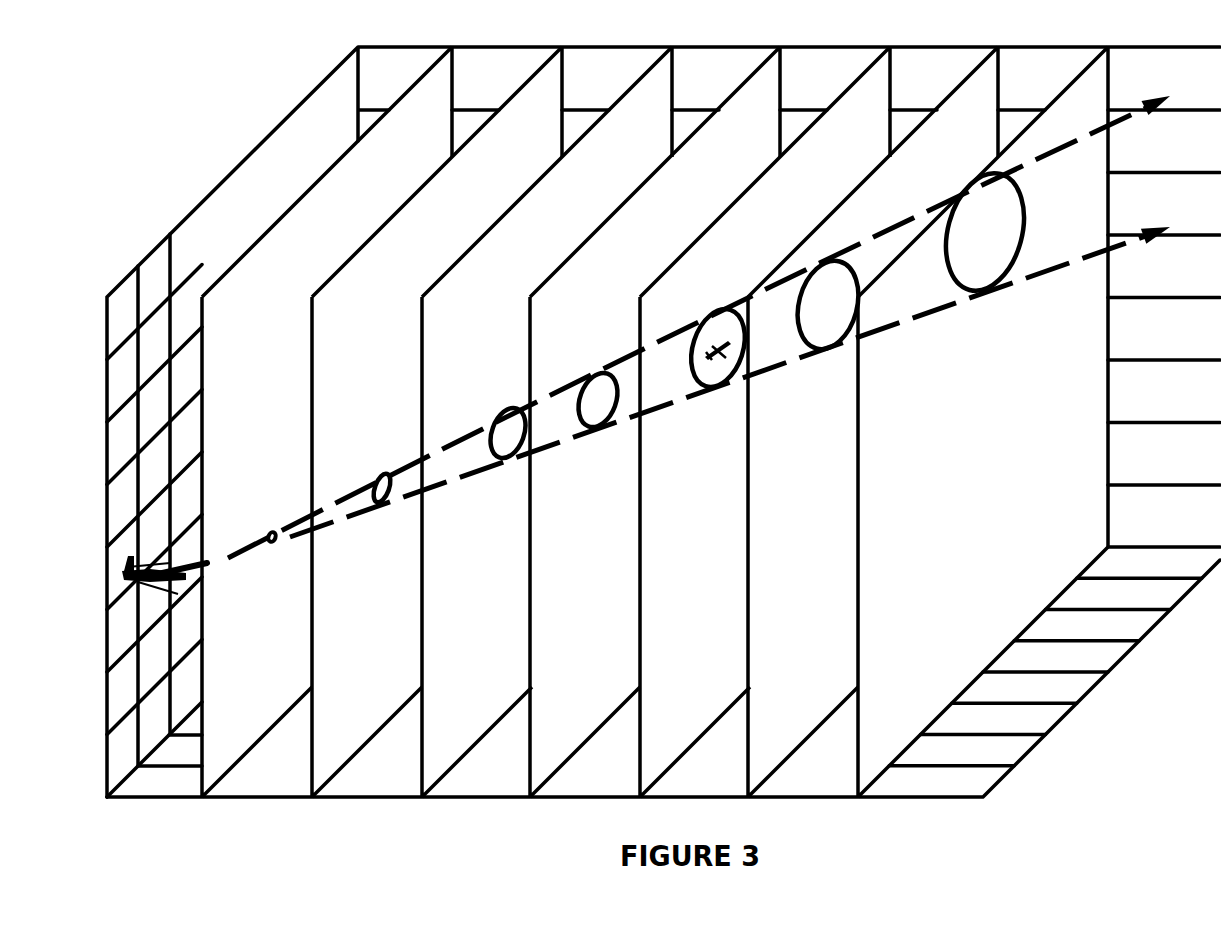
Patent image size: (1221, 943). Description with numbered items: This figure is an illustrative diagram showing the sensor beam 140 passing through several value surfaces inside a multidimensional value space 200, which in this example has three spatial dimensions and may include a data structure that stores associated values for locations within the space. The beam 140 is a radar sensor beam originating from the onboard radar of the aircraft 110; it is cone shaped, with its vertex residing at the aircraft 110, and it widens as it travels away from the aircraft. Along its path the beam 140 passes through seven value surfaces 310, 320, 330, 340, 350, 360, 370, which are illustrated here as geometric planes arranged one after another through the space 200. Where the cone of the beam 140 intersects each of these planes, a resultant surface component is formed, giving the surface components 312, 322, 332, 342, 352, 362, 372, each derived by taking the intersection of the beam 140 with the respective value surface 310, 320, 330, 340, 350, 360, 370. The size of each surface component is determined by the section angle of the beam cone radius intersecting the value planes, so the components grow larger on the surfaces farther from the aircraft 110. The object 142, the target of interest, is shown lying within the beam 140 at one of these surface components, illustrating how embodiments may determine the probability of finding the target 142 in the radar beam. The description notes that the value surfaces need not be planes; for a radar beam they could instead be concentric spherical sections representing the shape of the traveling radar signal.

The aircraft 110 is at (150, 568).
The multidimensional value space 200 is at (243, 187).
The sensor beam 140 is at (300, 518).
The object 142 is at (720, 357).
The value surface 310 is at (432, 90).
The value surface 320 is at (542, 90).
The value surface 330 is at (652, 90).
The value surface 340 is at (761, 90).
The value surface 350 is at (870, 90).
The value surface 360 is at (983, 90).
The value surface 370 is at (1094, 90).
The surface component 312 is at (272, 542).
The surface component 322 is at (383, 500).
The surface component 332 is at (500, 458).
The surface component 342 is at (585, 428).
The surface component 352 is at (695, 372).
The surface component 362 is at (792, 343).
The surface component 372 is at (955, 272).